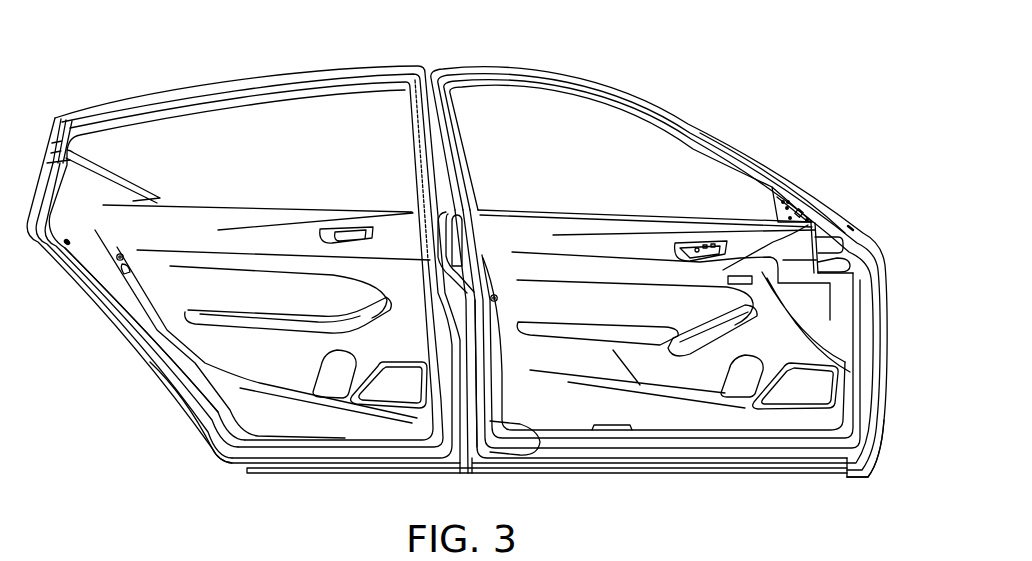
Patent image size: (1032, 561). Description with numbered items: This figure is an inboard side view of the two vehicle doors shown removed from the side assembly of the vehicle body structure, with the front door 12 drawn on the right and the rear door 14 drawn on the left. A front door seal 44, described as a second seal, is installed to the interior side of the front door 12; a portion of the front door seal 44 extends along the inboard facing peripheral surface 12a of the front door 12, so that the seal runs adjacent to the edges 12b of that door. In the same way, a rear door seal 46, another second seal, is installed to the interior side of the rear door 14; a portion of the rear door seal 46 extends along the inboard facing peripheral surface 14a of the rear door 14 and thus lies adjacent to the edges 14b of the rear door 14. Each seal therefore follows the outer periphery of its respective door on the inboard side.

The front door 12 is at (596, 86).
The inboard facing peripheral surface 12a is at (868, 428).
The edges 12b is at (765, 163).
The rear door 14 is at (263, 78).
The inboard facing peripheral surface 14a is at (232, 437).
The edges 14b is at (188, 417).
The front door seal 44 is at (496, 351).
The rear door seal 46 is at (175, 361).